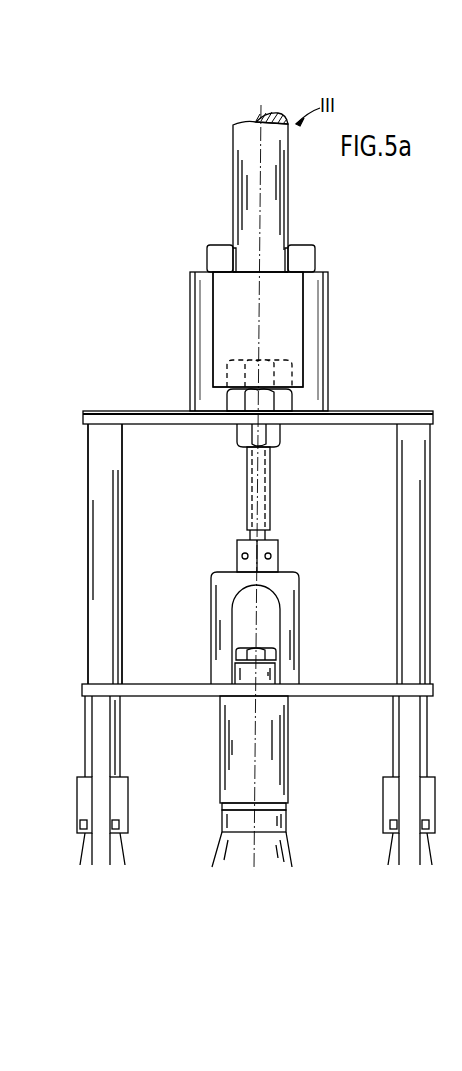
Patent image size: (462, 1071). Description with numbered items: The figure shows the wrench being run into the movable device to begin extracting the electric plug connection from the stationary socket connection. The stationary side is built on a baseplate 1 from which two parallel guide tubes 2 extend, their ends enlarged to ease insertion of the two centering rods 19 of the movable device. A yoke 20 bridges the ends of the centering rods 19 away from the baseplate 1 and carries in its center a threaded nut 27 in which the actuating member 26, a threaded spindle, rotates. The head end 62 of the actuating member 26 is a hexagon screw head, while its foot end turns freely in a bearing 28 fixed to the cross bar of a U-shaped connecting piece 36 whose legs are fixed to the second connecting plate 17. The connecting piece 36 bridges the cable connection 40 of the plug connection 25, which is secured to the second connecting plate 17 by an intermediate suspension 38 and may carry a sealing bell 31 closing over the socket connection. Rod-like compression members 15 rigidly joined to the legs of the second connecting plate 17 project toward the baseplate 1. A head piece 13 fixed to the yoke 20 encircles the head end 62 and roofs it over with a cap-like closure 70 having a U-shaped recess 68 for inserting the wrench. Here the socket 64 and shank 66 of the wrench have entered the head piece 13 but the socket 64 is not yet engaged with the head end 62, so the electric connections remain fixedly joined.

The baseplate 1 is at (90, 530).
The guide tubes 2 is at (122, 838).
The head piece 13 is at (190, 320).
The compression members 15 is at (100, 728).
The second connecting plate 17 is at (162, 690).
The centering rods 19 is at (93, 455).
The yoke 20 is at (140, 418).
The plug connection 25 is at (288, 806).
The actuating member 26 is at (230, 497).
The threaded nut 27 is at (280, 436).
The bearing 28 is at (272, 553).
The sealing bell 31 is at (290, 850).
The connecting piece 36 is at (292, 600).
The intermediate suspension 38 is at (274, 743).
The cable connection 40 is at (276, 673).
The head end 62 is at (288, 400).
The socket 64 is at (300, 313).
The shank 66 is at (270, 195).
The U-shaped recess 68 is at (233, 248).
The cap-like closure 70 is at (208, 254).